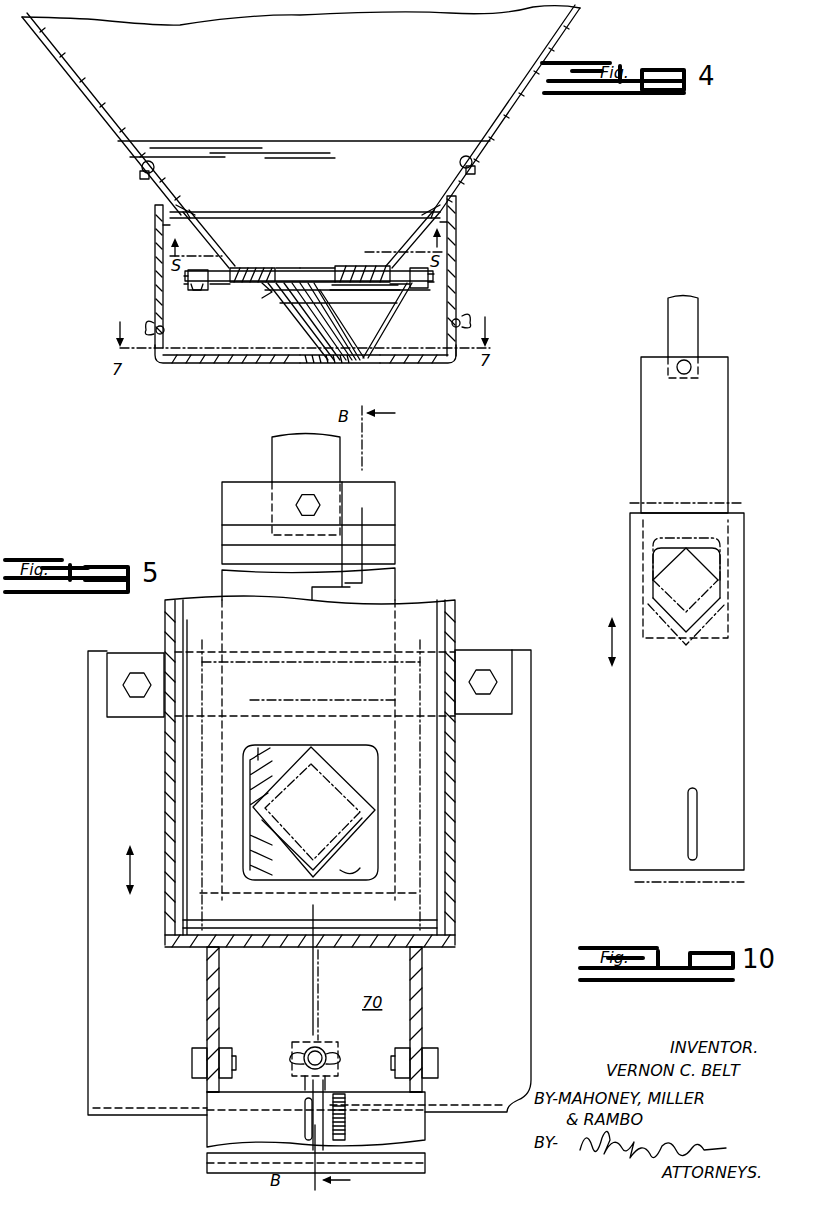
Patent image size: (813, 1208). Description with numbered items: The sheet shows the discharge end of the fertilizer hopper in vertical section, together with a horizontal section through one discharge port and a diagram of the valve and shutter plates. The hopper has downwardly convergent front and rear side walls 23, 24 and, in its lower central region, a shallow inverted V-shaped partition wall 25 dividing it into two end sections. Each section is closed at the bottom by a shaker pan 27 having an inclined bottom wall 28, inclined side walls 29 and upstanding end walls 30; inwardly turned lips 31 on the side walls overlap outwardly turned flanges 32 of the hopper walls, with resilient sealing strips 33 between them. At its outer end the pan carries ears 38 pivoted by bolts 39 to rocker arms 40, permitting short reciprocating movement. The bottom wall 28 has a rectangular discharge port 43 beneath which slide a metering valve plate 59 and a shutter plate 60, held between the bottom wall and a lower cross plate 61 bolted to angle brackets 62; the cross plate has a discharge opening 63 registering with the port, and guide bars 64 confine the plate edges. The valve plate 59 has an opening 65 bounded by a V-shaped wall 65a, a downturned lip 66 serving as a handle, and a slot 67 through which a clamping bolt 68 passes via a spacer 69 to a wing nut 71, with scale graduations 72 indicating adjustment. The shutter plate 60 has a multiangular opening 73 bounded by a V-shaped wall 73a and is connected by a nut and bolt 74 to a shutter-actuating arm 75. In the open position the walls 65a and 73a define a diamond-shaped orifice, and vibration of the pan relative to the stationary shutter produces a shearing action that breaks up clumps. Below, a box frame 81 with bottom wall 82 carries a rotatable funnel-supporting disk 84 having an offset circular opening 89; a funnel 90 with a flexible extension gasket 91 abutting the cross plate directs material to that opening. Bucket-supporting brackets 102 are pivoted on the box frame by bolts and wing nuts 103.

In FIG. 4, the front side wall 23 is at (577, 29).
In FIG. 4, the rear side wall 24 is at (67, 73).
In FIG. 4, the partition wall 25 is at (328, 138).
In FIG. 4, the shaker pan 27 is at (453, 216).
In FIG. 5, the shaker pan 27 is at (165, 759).
In FIG. 4, the bottom wall 28 is at (262, 266).
In FIG. 4, the side walls 29 is at (200, 238).
In FIG. 5, the side walls 29 is at (178, 795).
In FIG. 4, the end walls 30 is at (318, 216).
In FIG. 5, the end walls 30 is at (324, 934).
In FIG. 4, the lips 31 is at (160, 210).
In FIG. 4, the flanges 32 is at (192, 210).
In FIG. 4, the sealing strips 33 is at (165, 190).
In FIG. 5, the ears 38 is at (206, 996).
In FIG. 5, the bolts 39 is at (192, 1058).
In FIG. 5, the rocker arms 40 is at (205, 1088).
In FIG. 4, the discharge port 43 is at (288, 266).
In FIG. 5, the discharge port 43 is at (263, 748).
In FIG. 4, the metering valve plate 59 is at (366, 260).
In FIG. 5, the metering valve plate 59 is at (426, 1128).
In FIG. 10, the metering valve plate 59 is at (636, 715).
In FIG. 4, the shutter plate 60 is at (262, 286).
In FIG. 5, the shutter plate 60 is at (396, 583).
In FIG. 10, the shutter plate 60 is at (728, 427).
In FIG. 4, the lower cross plate 61 is at (420, 284).
In FIG. 5, the lower cross plate 61 is at (526, 790).
In FIG. 4, the angle brackets 62 is at (222, 263).
In FIG. 5, the angle brackets 62 is at (130, 668).
In FIG. 4, the discharge opening 63 is at (330, 304).
In FIG. 4, the guide bars 64 is at (228, 289).
In FIG. 5, the guide bars 64 is at (181, 922).
In FIG. 4, the opening 65 is at (301, 266).
In FIG. 5, the opening 65 is at (332, 748).
In FIG. 10, the opening 65 is at (655, 563).
In FIG. 5, the V-shaped wall 65a is at (300, 838).
In FIG. 10, the V-shaped wall 65a is at (660, 600).
In FIG. 5, the downturned lip 66 is at (210, 1161).
In FIG. 5, the slot 67 is at (305, 1122).
In FIG. 10, the slot 67 is at (687, 826).
In FIG. 5, the clamping bolt 68 is at (310, 1046).
In FIG. 5, the spacer 69 is at (330, 1068).
In FIG. 5, the wing nut 71 is at (338, 1054).
In FIG. 5, the scale graduations 72 is at (348, 1118).
In FIG. 4, the multiangular opening 73 is at (336, 283).
In FIG. 5, the multiangular opening 73 is at (352, 884).
In FIG. 5, the V-shaped wall 73a is at (323, 766).
In FIG. 10, the V-shaped wall 73a is at (712, 572).
In FIG. 5, the nut and bolt 74 is at (300, 500).
In FIG. 10, the nut and bolt 74 is at (690, 364).
In FIG. 5, the shutter-actuating arm 75 is at (275, 443).
In FIG. 10, the shutter-actuating arm 75 is at (699, 322).
In FIG. 4, the box frame 81 is at (156, 230).
In FIG. 4, the bottom wall 82 is at (420, 364).
In FIG. 4, the funnel-supporting disk 84 is at (248, 366).
In FIG. 4, the circular opening 89 is at (331, 366).
In FIG. 4, the funnel 90 is at (392, 328).
In FIG. 4, the extension gasket 91 is at (265, 295).
In FIG. 4, the bucket-supporting brackets 102 is at (156, 248).
In FIG. 4, the bolts and wing nuts 103 is at (152, 318).